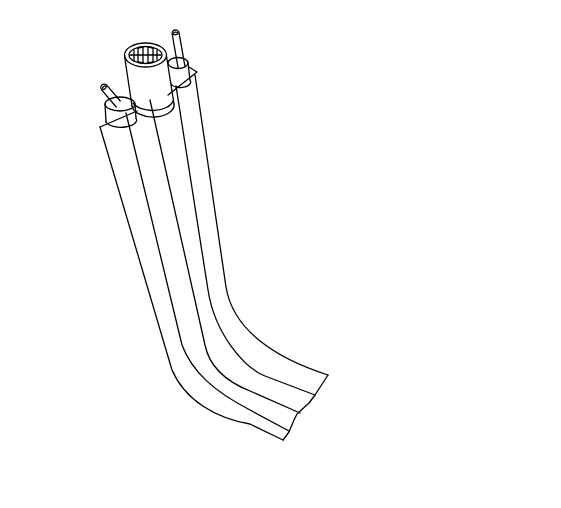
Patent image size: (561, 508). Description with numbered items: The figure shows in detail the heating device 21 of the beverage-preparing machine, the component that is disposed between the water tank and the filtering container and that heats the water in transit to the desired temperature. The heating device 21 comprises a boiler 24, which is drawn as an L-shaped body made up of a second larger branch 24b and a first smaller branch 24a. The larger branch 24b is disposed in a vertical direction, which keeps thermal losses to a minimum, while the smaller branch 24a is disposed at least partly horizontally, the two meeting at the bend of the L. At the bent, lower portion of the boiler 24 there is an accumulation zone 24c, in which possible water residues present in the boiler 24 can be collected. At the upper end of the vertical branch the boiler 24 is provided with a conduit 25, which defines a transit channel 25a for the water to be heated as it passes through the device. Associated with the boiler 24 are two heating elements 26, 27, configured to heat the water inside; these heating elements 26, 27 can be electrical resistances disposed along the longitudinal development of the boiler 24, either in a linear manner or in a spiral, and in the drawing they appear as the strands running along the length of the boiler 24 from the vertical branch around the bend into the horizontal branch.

The heating device 21 is at (243, 247).
The boiler 24 is at (210, 322).
The first smaller branch 24a is at (295, 394).
The second larger branch 24b is at (187, 210).
The accumulation zone 24c is at (228, 367).
The conduit 25 is at (123, 74).
The transit channel 25a is at (149, 45).
The heating element 26 is at (276, 357).
The heating element 27 is at (192, 344).